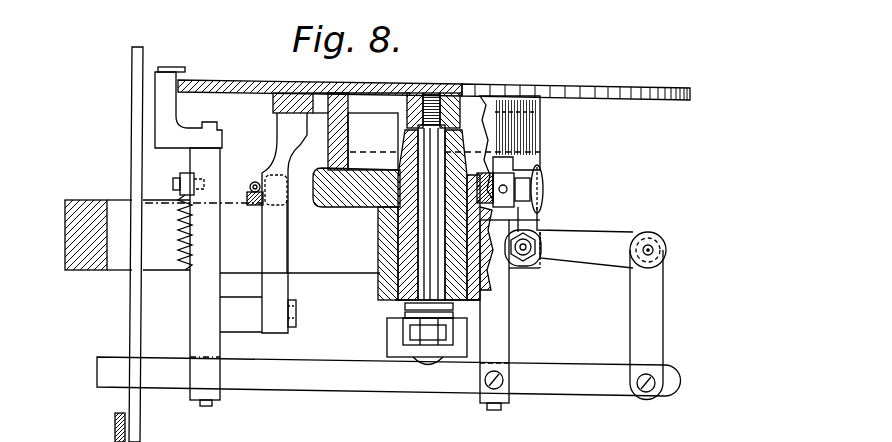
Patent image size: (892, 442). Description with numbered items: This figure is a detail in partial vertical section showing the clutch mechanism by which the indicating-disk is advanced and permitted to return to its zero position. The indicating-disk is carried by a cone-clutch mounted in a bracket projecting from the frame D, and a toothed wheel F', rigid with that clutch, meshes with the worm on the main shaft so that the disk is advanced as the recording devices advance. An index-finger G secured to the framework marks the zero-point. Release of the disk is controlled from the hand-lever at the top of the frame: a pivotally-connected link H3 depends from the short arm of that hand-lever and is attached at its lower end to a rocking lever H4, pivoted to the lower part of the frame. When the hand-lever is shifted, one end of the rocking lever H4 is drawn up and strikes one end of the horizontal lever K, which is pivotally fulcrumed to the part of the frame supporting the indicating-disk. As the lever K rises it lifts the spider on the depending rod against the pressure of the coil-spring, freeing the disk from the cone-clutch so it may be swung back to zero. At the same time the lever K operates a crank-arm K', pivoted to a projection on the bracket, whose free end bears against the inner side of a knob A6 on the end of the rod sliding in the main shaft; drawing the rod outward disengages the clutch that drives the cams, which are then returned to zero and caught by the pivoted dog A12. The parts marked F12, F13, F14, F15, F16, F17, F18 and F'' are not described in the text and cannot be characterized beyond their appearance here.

The index-finger G is at (188, 224).
The toothed wheel F' is at (434, 77).
The block under plate F16 is at (275, 102).
The vertical bar F17 is at (286, 127).
The pin F18 is at (253, 182).
The pivoted dog A12 is at (186, 173).
The cup / cylinder F12 is at (350, 130).
The knob A6 is at (544, 175).
The crank-arm K' is at (585, 234).
The frame D is at (65, 232).
The housing F'' is at (380, 214).
The shaft sleeve F13 is at (423, 250).
The nut assembly F14 is at (390, 337).
The vertical link bar F15 is at (467, 315).
The pivotally-connected link H3 is at (133, 305).
The rocking lever H4 is at (115, 420).
The lever K is at (389, 376).